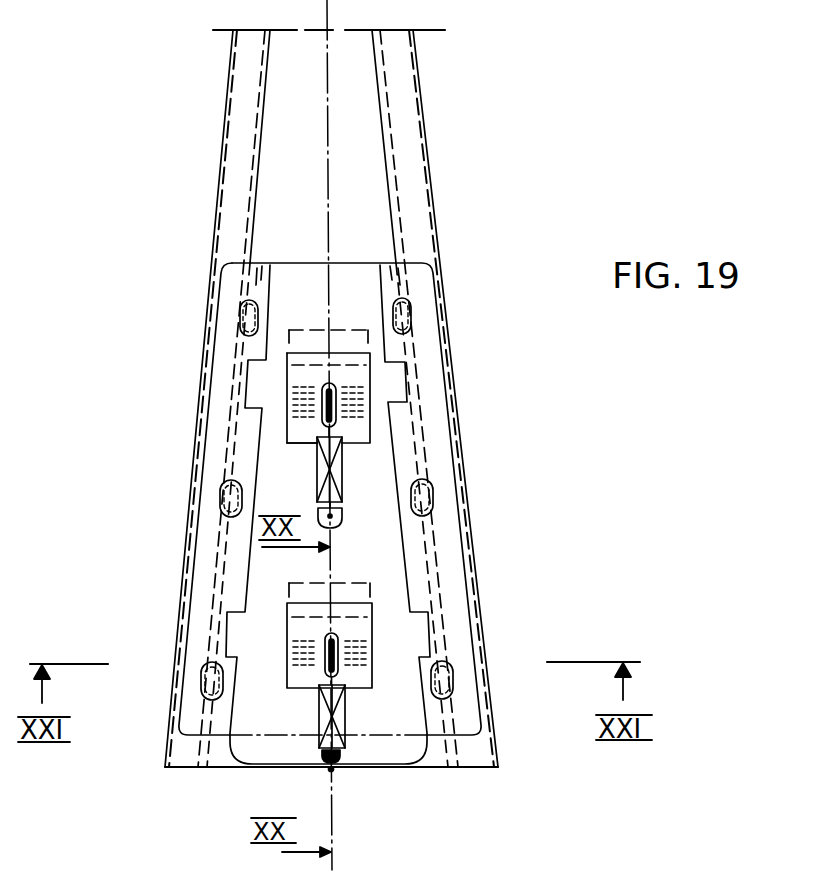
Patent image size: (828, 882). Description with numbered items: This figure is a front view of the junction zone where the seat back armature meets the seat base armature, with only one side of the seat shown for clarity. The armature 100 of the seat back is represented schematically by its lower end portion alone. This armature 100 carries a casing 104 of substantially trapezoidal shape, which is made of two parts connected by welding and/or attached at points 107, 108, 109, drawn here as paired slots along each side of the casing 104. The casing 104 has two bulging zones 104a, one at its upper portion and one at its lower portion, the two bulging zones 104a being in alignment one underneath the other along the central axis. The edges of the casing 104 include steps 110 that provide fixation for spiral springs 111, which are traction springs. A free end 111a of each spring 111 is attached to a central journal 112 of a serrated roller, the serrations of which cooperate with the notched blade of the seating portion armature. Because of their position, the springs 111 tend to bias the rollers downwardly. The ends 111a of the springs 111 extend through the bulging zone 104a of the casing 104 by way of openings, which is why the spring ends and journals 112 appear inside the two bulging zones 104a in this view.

The armature of the seat back 100 is at (362, 161).
The casing 104 is at (406, 564).
The bulging zone 104a is at (382, 378).
The attachment point 107 is at (239, 316).
The attachment point 108 is at (221, 499).
The attachment point 109 is at (203, 676).
The step 110 is at (342, 510).
The spiral spring 111 is at (334, 465).
The free end of spring 111a is at (328, 434).
The central journal 112 is at (293, 407).